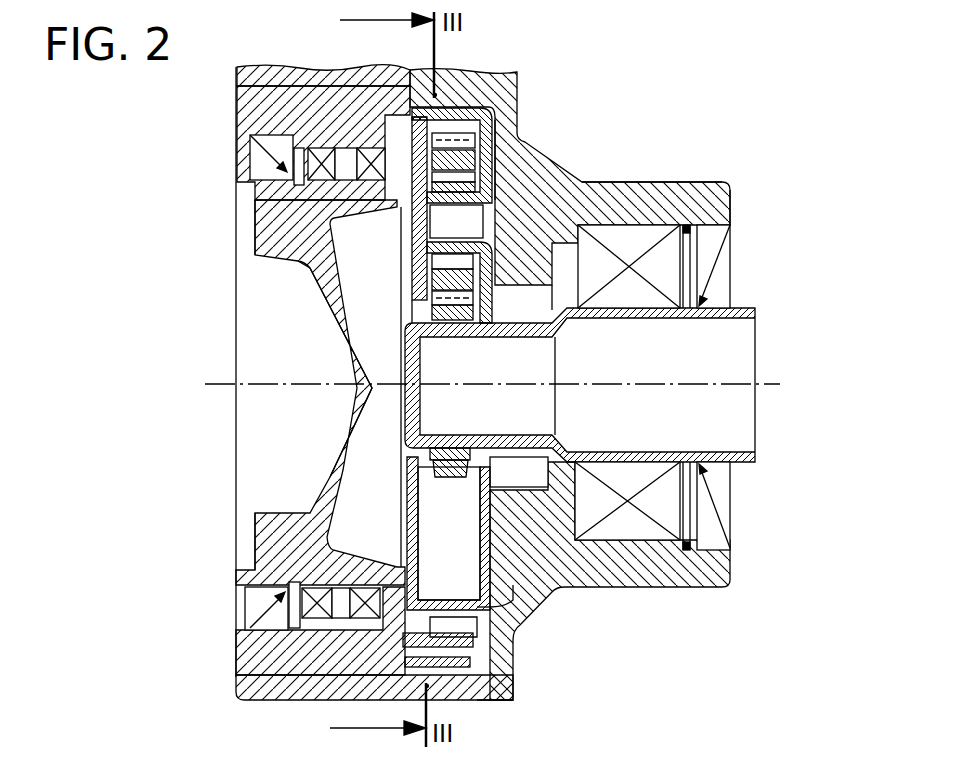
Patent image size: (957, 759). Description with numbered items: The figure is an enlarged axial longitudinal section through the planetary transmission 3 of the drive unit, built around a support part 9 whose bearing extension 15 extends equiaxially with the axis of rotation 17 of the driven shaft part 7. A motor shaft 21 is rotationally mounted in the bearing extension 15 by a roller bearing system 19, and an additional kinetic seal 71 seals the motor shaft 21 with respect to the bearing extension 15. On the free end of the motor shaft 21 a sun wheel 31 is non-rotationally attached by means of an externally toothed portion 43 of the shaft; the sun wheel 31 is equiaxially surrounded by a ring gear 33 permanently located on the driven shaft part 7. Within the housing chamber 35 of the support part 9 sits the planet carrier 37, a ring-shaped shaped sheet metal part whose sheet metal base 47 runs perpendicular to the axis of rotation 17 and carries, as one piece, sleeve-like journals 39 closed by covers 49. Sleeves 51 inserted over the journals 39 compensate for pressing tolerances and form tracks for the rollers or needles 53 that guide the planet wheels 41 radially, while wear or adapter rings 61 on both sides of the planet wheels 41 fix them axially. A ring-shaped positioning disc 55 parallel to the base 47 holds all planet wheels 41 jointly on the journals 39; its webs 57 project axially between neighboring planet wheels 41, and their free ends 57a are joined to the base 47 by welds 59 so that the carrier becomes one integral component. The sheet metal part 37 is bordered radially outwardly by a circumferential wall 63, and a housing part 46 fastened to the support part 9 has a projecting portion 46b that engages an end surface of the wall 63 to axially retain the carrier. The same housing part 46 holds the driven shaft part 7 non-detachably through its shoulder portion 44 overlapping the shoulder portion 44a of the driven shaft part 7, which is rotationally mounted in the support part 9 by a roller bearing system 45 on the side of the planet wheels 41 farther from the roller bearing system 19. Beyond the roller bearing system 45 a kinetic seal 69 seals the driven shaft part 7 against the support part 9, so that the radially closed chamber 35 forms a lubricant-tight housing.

The planetary transmission 3 is at (528, 80).
The driven shaft part 7 is at (258, 237).
The support part 9 is at (260, 80).
The bearing extension 15 is at (715, 213).
The axis of rotation 17 is at (212, 386).
The roller bearing system 19 is at (653, 243).
The motor shaft 21 is at (506, 462).
The sun wheel 31 is at (435, 473).
The ring gear 33 is at (467, 130).
The housing chamber 35 is at (548, 220).
The planet carrier 37 is at (500, 133).
The journals 39 is at (481, 232).
The planet wheels 41 is at (342, 325).
The externally toothed portion 43 is at (510, 298).
The shoulder portion 44 is at (383, 637).
The shoulder portion 44a is at (380, 620).
The roller bearing system 45 is at (362, 150).
The housing part 46 is at (233, 642).
The projecting portion 46b is at (478, 700).
The sheet metal base 47 is at (490, 168).
The covers 49 is at (418, 233).
The sleeves 51 is at (327, 278).
The rollers or needles 53 is at (430, 278).
The positioning disc 55 is at (412, 520).
The webs 57 is at (512, 615).
The free ends 57a is at (508, 628).
The welds 59 is at (512, 642).
The wear or adapter rings 61 is at (500, 178).
The circumferential wall 63 is at (413, 125).
The kinetic seal 69 is at (255, 155).
The kinetic seal 71 is at (718, 283).